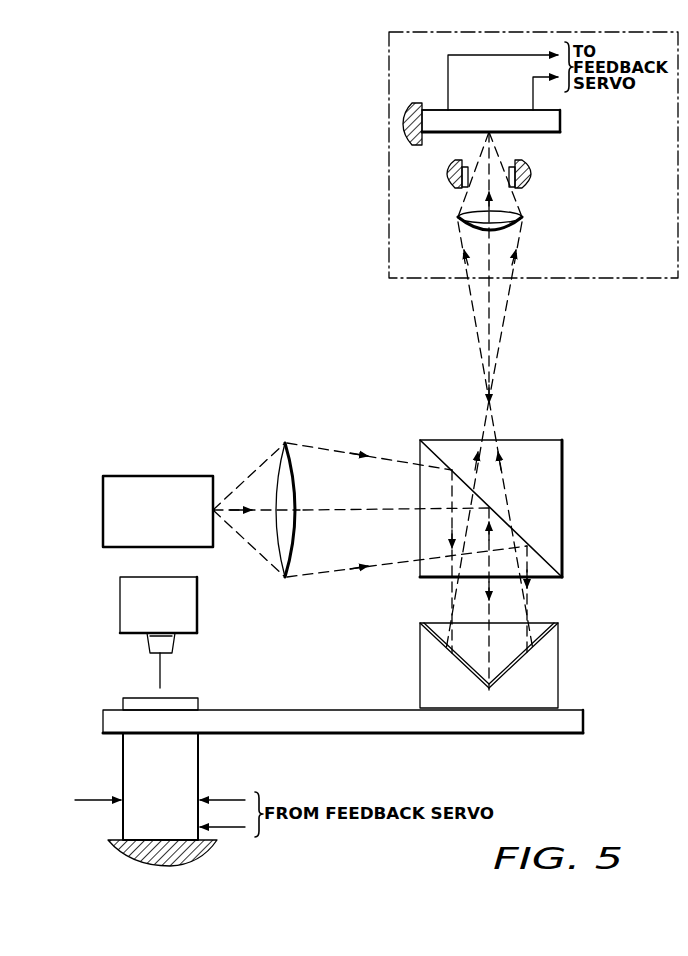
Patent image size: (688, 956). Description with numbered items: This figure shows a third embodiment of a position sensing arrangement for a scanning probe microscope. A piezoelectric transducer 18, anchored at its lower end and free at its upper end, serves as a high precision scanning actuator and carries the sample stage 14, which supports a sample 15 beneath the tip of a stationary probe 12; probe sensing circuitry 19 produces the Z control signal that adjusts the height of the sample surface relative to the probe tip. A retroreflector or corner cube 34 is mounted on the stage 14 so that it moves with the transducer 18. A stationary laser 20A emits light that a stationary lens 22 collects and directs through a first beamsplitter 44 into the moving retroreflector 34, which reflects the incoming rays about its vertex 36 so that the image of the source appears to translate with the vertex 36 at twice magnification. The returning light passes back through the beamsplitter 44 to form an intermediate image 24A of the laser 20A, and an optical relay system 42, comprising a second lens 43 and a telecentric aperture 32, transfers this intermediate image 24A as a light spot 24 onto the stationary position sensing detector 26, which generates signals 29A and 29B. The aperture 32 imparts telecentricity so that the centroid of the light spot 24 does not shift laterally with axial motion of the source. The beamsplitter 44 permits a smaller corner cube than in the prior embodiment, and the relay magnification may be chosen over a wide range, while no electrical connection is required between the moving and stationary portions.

The probe 12 is at (161, 668).
The sample stage 14 is at (328, 735).
The sample 15 is at (198, 700).
The piezoelectric transducer 18 is at (198, 752).
The probe sensing circuitry 19 is at (197, 603).
The stationary laser 20A is at (157, 476).
The stationary lens 22 is at (296, 470).
The light spot 24 is at (492, 135).
The intermediate image 24A is at (494, 403).
The position sensing detector 26 is at (560, 122).
The detector signal 29A is at (460, 60).
The detector signal 29B is at (533, 97).
The telecentric aperture 32 is at (447, 185).
The retroreflector 34 is at (558, 680).
The vertex 36 is at (490, 690).
The optical relay system 42 is at (389, 108).
The second lens 43 is at (512, 216).
The first beamsplitter 44 is at (562, 478).